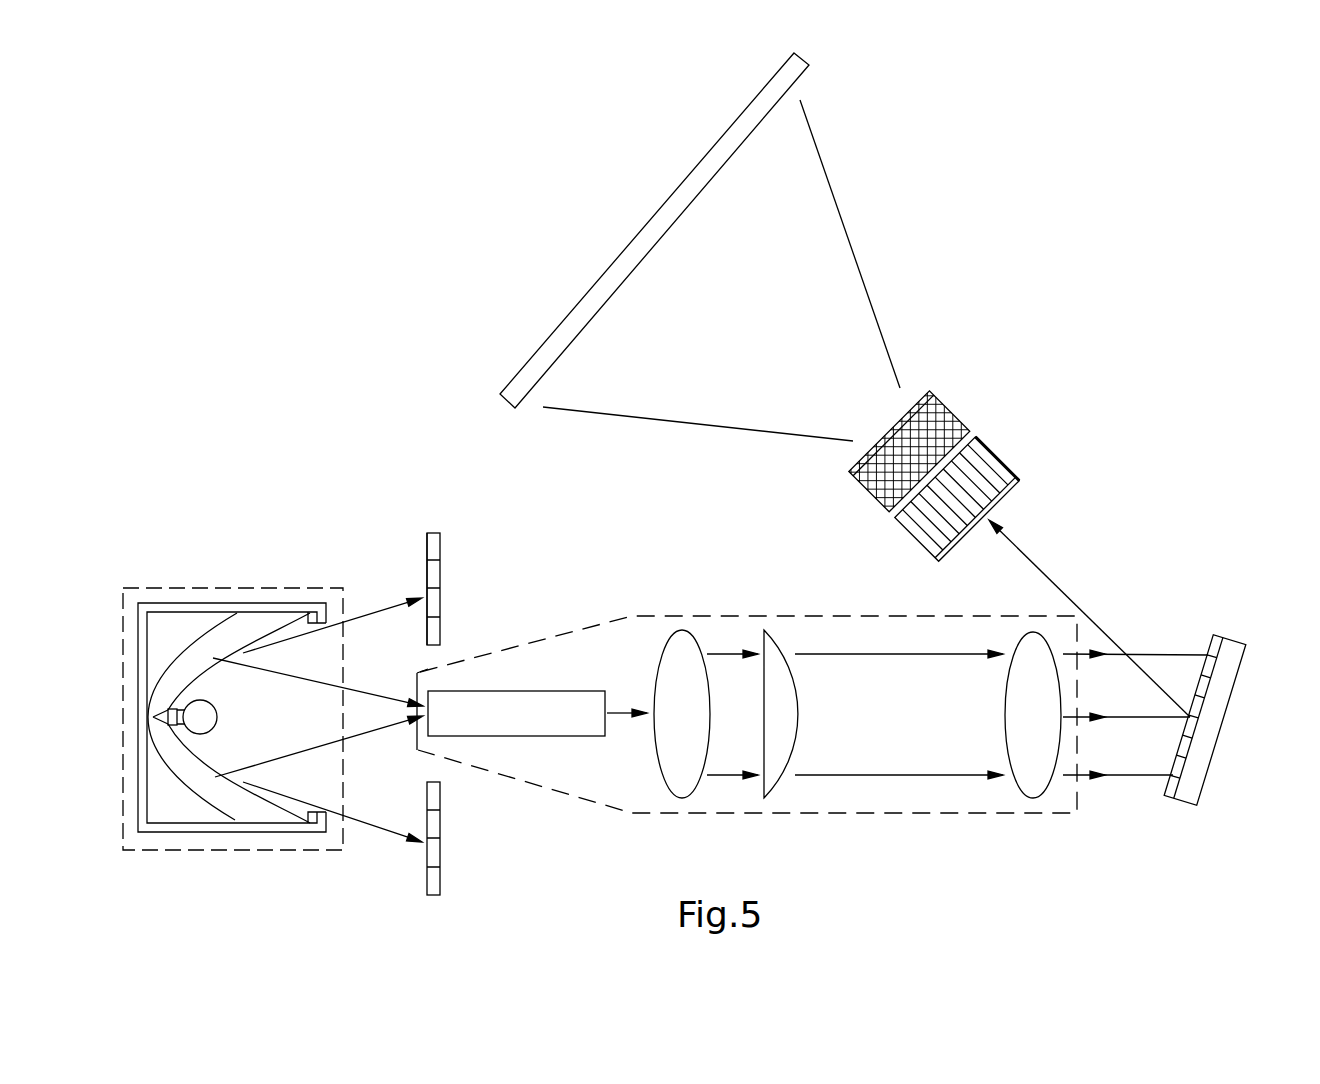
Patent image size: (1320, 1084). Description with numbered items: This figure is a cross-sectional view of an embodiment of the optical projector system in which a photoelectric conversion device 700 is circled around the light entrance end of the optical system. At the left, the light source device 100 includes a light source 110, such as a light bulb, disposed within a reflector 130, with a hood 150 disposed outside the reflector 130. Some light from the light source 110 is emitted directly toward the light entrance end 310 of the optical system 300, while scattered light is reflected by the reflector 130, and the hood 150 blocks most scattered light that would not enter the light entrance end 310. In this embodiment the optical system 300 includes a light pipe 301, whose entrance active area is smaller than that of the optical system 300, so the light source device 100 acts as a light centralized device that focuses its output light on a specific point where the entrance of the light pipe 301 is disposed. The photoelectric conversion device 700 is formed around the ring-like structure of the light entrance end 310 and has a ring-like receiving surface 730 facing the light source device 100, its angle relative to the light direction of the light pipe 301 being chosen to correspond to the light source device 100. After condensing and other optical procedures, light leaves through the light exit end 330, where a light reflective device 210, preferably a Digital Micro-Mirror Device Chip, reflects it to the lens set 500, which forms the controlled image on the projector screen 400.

The light source device 100 is at (231, 588).
The light source 110 is at (200, 718).
The reflector 130 is at (185, 657).
The hood 150 is at (200, 607).
The photoelectric conversion device 700 is at (433, 575).
The ring-like receiving surface 730 is at (425, 551).
The optical system 300 is at (772, 615).
The light pipe 301 is at (515, 713).
The light entrance end 310 is at (418, 686).
The light exit end 330 is at (1082, 632).
The light reflective device 210 is at (1207, 735).
The projector screen 400 is at (648, 237).
The lens set 500 is at (943, 413).